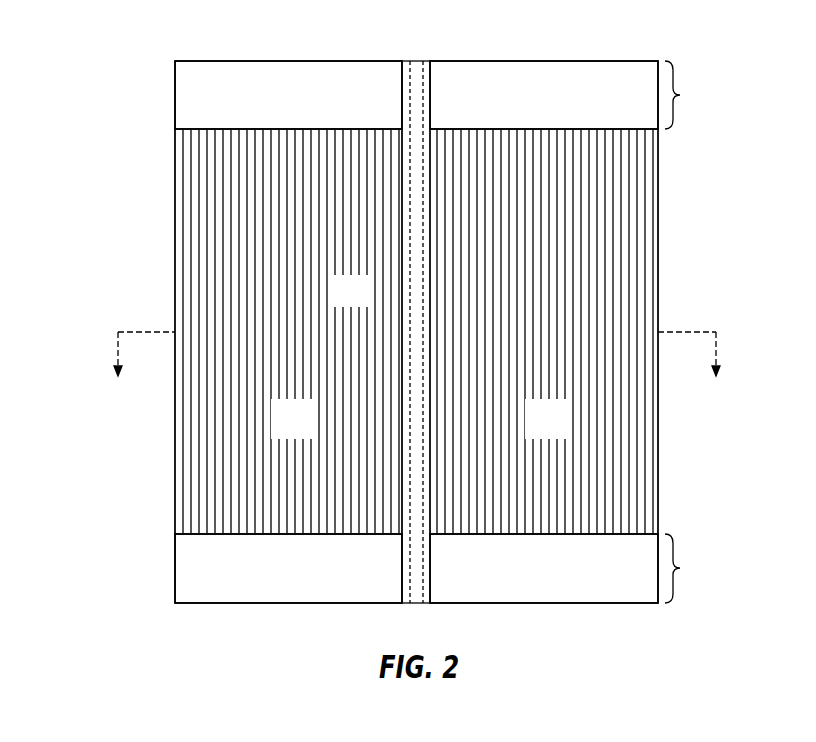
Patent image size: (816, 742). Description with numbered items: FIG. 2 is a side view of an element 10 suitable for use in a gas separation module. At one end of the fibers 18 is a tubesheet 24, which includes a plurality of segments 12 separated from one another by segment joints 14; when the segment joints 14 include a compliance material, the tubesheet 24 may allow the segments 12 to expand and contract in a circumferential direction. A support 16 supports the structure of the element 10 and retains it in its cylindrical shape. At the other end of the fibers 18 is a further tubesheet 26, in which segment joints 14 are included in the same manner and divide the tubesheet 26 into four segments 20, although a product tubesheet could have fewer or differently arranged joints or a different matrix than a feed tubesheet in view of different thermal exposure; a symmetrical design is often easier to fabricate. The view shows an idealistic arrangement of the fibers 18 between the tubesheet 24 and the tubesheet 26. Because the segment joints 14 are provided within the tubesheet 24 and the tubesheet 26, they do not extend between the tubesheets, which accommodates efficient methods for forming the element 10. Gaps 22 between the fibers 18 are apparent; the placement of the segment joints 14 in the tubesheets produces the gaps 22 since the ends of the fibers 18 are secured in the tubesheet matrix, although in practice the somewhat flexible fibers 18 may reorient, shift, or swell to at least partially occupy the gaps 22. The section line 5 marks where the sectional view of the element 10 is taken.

The element 10 is at (139, 49).
The segments 12 is at (271, 108).
The segment joints 14 is at (410, 61).
The support 16 is at (432, 103).
The fibers 18 is at (307, 432).
The segments 20 is at (309, 581).
The gaps 22 is at (421, 308).
The tubesheet 24 is at (442, 95).
The further tubesheet 26 is at (444, 568).
The line 5- 5 is at (417, 372).